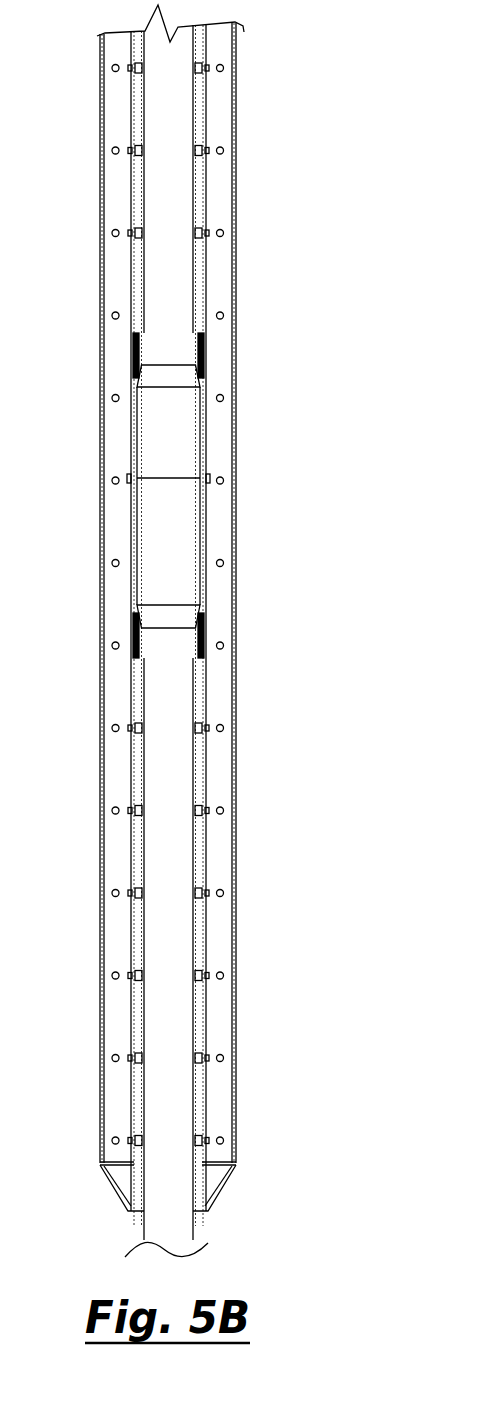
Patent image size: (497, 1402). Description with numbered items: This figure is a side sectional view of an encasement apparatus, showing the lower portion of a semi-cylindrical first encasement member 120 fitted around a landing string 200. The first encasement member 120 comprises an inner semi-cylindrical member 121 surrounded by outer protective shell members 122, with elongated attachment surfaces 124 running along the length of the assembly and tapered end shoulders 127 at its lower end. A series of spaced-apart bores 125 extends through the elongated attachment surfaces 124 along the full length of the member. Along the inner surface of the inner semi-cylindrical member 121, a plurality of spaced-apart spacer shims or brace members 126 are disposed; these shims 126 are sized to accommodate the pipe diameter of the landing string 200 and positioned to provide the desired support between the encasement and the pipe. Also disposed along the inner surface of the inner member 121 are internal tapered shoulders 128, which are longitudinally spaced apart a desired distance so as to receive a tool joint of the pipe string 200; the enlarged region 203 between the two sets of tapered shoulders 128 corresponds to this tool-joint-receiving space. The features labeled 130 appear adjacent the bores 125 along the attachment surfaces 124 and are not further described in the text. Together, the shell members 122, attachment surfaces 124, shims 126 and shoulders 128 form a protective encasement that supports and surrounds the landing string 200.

The semi-cylindrical first encasement member 120 is at (173, 631).
The inner semi-cylindrical member 121 is at (127, 940).
The outer protective shell member 122 is at (237, 713).
The elongated attachment surface 124 is at (117, 190).
The spaced-apart bore 125 is at (118, 74).
The spacer shim 126 is at (132, 242).
The tapered end shoulder 127 is at (222, 1188).
The internal tapered shoulder 128 is at (133, 358).
The fasteners 130 is at (105, 42).
The landing string 200 is at (186, 797).
The enlarged section 203 is at (178, 473).